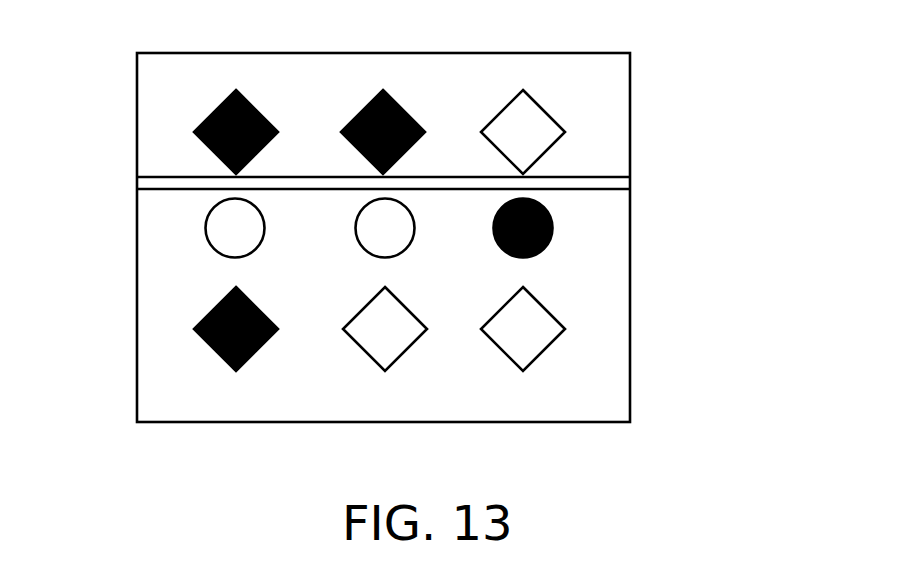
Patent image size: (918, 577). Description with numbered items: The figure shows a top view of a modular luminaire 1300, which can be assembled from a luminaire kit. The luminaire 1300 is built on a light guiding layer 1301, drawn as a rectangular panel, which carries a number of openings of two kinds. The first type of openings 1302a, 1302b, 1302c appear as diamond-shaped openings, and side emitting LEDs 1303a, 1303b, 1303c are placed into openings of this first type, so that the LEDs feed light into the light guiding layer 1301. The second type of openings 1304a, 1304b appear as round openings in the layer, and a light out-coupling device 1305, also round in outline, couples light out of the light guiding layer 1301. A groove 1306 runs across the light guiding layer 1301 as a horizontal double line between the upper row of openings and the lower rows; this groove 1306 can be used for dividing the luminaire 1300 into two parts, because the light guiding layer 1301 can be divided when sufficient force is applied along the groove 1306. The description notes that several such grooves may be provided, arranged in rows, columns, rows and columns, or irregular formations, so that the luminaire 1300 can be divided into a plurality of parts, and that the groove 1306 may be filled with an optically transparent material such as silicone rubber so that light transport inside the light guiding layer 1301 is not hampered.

The luminaire 1300 is at (679, 263).
The light guiding layer 1301 is at (631, 345).
The first type of opening 1302a is at (538, 108).
The first type of opening 1302b is at (392, 370).
The first type of opening 1302c is at (527, 370).
The side emitting LED 1303a is at (252, 108).
The side emitting LED 1303b is at (404, 108).
The side emitting LED 1303c is at (244, 370).
The second type of opening 1304a is at (206, 239).
The second type of opening 1304b is at (363, 222).
The light out-coupling device 1305 is at (553, 228).
The groove 1306 is at (593, 174).